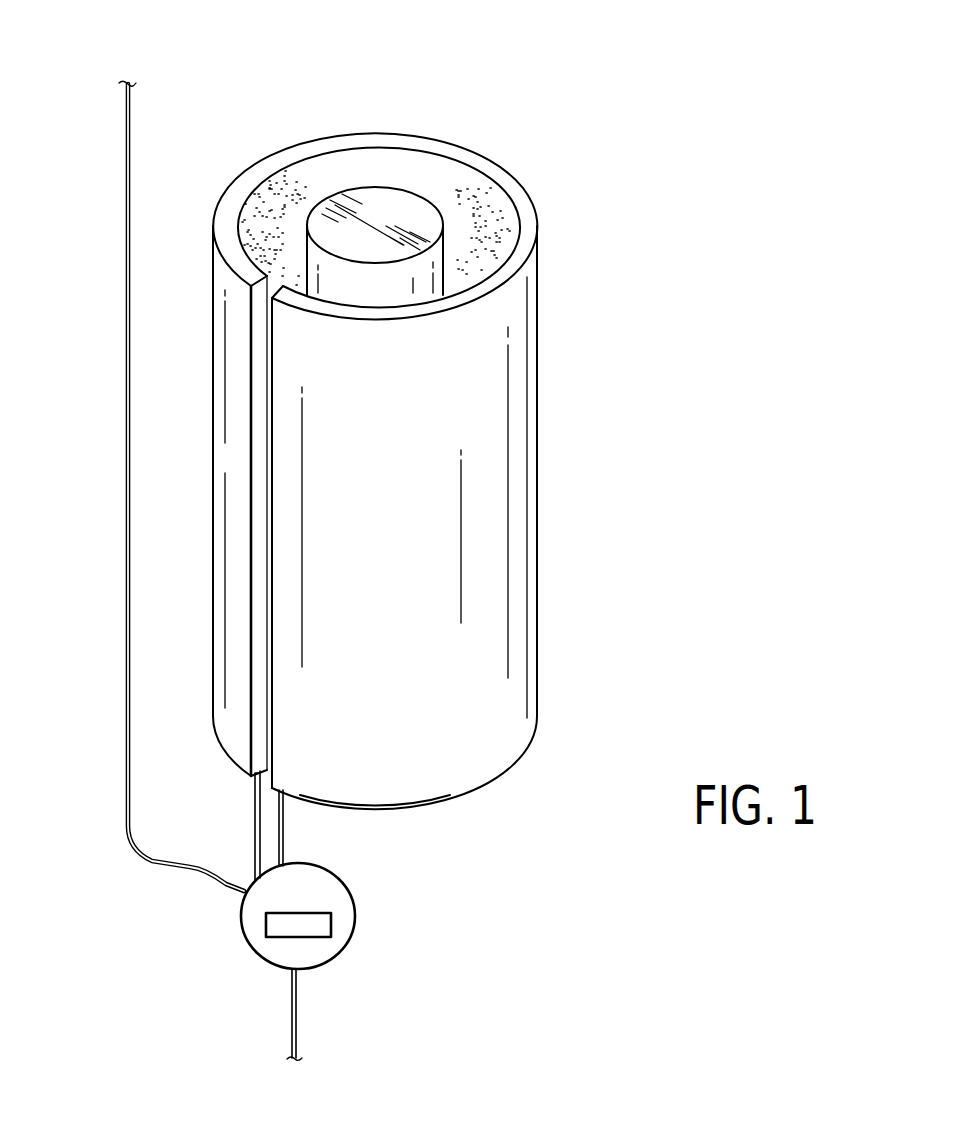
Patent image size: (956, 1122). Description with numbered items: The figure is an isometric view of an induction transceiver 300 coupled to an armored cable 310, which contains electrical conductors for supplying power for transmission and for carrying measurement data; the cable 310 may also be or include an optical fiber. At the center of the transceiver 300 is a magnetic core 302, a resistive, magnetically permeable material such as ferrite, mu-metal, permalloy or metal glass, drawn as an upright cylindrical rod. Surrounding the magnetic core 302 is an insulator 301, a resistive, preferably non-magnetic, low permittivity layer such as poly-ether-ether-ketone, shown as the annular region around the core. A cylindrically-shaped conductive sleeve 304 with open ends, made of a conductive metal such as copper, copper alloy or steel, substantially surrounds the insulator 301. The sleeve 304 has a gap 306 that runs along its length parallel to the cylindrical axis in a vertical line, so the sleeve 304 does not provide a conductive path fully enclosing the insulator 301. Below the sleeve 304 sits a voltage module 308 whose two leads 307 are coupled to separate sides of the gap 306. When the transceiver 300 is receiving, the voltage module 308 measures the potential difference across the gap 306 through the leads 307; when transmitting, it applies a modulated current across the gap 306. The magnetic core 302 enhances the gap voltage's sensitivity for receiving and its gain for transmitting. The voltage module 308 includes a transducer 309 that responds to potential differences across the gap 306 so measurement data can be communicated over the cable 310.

The induction transceiver 300 is at (533, 64).
The insulator 301 is at (461, 184).
The magnetic core 302 is at (380, 200).
The conductive sleeve 304 is at (376, 808).
The gap 306 is at (239, 454).
The leads 307 is at (257, 822).
The voltage module 308 is at (243, 900).
The transducer 309 is at (266, 925).
The armored cable 310 is at (127, 846).